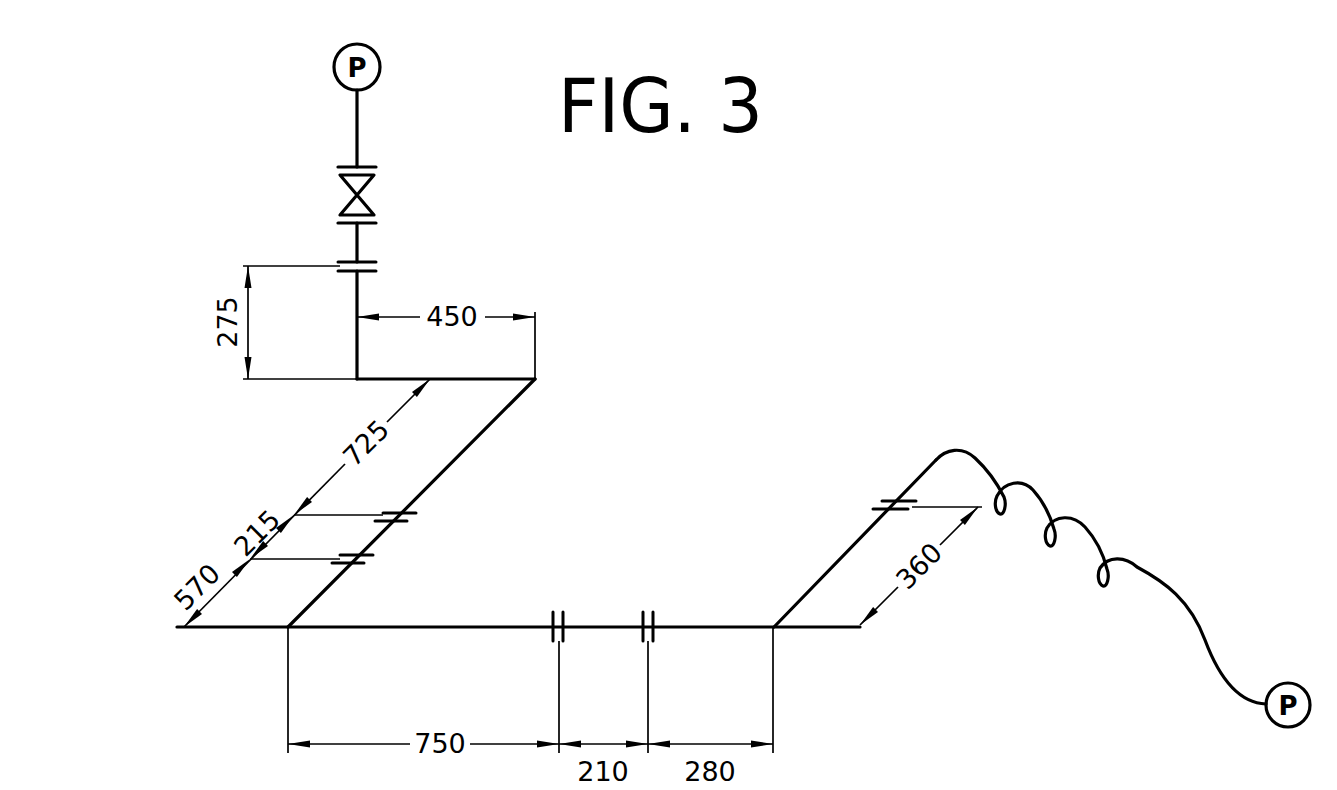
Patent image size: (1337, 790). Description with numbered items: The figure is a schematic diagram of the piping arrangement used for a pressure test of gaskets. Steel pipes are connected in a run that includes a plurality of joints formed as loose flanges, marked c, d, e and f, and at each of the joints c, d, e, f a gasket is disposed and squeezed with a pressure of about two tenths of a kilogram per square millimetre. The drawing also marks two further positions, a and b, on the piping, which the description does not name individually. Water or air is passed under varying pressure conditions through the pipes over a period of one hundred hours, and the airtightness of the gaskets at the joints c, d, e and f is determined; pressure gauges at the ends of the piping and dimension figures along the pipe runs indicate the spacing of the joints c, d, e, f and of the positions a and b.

The pressure tap a is at (878, 500).
The pressure tap b is at (375, 259).
The joint (loose flange) c is at (648, 611).
The joint (loose flange) d is at (558, 611).
The joint (loose flange) e is at (364, 563).
The joint (loose flange) f is at (404, 522).